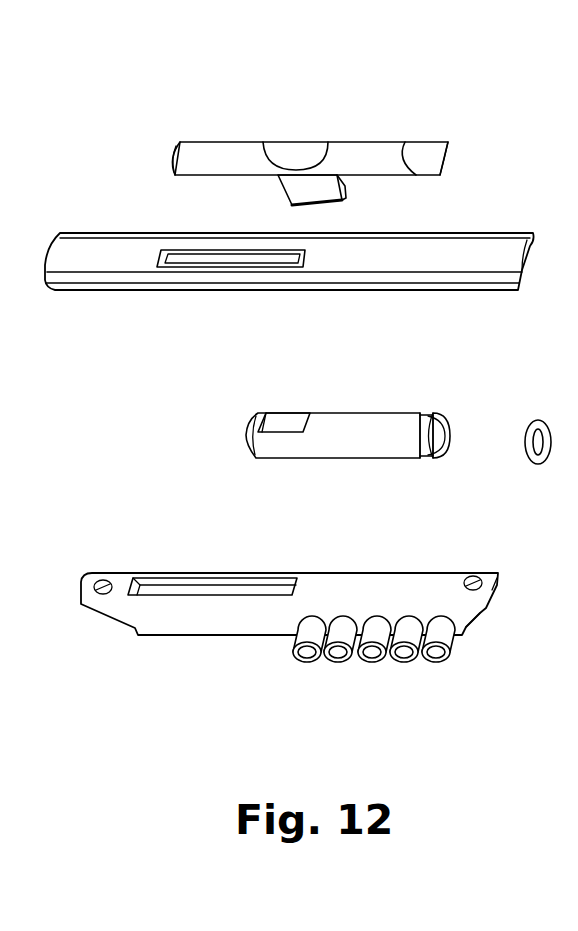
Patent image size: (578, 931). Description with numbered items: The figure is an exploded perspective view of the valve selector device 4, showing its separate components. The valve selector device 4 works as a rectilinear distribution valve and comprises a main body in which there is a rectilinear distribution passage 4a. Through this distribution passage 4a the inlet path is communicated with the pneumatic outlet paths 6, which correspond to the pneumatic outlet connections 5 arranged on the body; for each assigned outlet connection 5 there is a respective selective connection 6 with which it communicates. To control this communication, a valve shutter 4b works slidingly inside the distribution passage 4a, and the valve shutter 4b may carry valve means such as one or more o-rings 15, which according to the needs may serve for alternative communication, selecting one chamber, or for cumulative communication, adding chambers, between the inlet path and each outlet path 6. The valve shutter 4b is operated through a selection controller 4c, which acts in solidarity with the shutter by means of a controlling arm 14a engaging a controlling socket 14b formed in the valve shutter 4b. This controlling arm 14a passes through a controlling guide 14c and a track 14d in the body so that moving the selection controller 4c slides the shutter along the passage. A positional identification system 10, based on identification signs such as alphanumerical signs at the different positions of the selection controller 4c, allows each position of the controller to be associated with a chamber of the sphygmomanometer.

The valve selector device 4 is at (237, 665).
The rectilinear distribution passage 4a is at (183, 617).
The valve shutter 4b is at (332, 445).
The selection controller 4c is at (297, 137).
The pneumatic outlet connections 5 is at (464, 652).
The pneumatic outlet paths 6 is at (336, 670).
The positional identification system 10 is at (408, 251).
The controlling arm 14a is at (277, 188).
The controlling socket 14b is at (290, 422).
The controlling guide 14c is at (198, 258).
The track 14d is at (185, 588).
The o-rings 15 is at (530, 462).